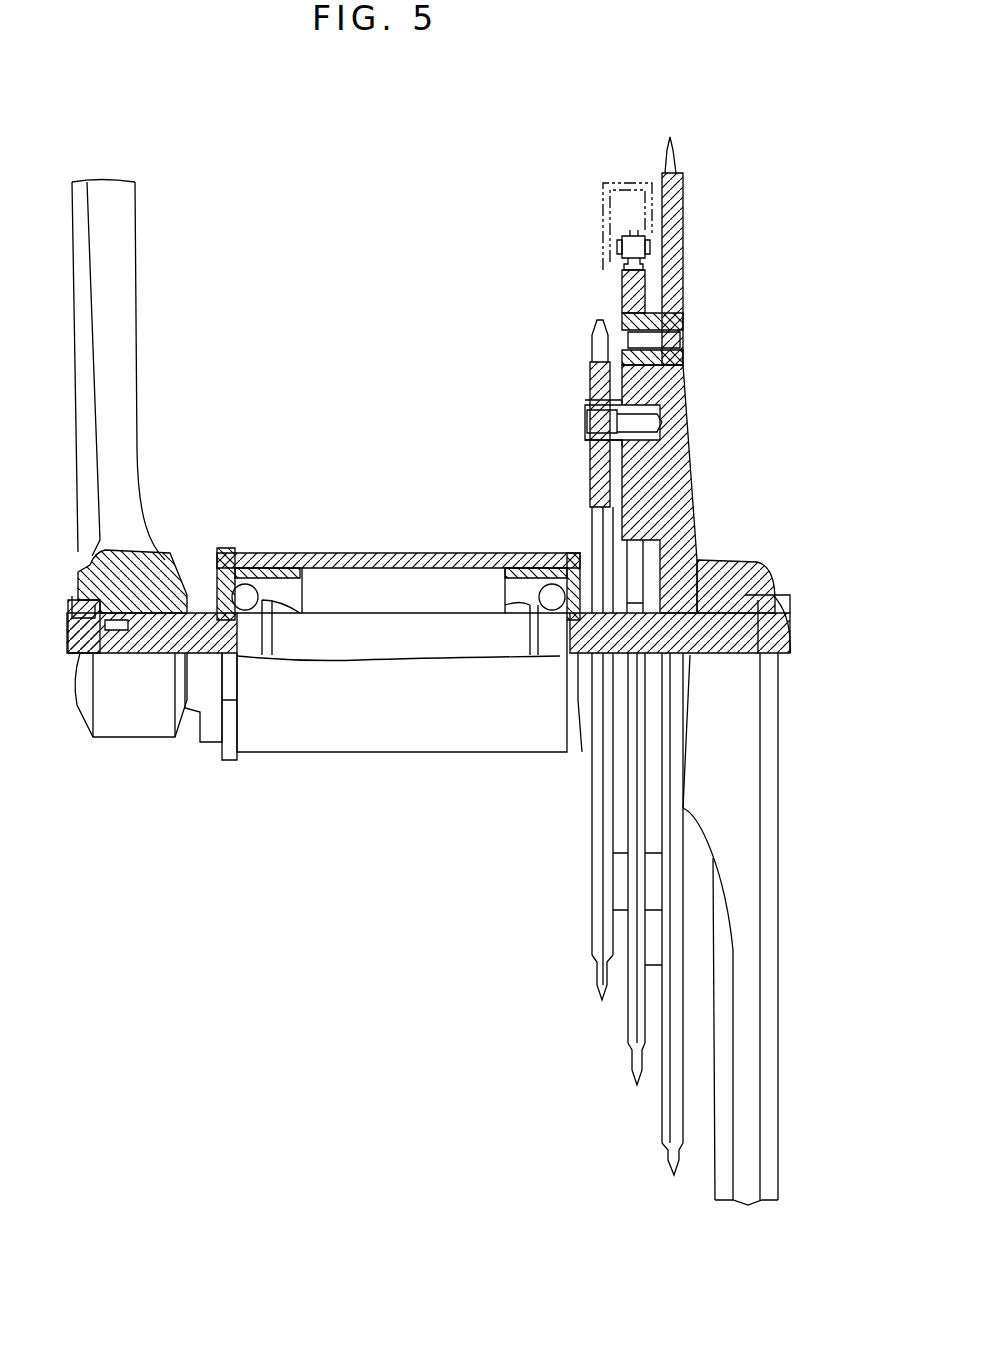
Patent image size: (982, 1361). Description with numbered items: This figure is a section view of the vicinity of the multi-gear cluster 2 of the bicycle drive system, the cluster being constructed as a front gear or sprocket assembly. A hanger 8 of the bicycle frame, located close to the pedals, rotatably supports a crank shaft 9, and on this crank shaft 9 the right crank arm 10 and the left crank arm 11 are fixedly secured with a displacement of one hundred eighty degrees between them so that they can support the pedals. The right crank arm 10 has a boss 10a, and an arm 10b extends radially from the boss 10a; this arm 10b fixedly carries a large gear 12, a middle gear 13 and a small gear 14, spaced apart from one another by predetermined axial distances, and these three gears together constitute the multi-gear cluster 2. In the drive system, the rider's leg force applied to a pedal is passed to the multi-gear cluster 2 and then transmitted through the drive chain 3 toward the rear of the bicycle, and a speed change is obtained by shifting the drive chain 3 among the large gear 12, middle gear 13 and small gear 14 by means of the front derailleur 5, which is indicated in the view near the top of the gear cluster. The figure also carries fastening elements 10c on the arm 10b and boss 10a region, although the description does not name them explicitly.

The multi-gear cluster 2 is at (579, 673).
The drive chain 3 is at (618, 232).
The front derailleur 5 is at (610, 178).
The hanger 8 is at (372, 553).
The crank shaft 9 is at (437, 622).
The right crank arm 10 is at (772, 1022).
The boss 10a is at (727, 567).
The arm 10b is at (672, 470).
The fastening bolt 10c is at (683, 320).
The left crank arm 11 is at (128, 405).
The large gear 12 is at (668, 1158).
The middle gear 13 is at (632, 1065).
The small gear 14 is at (593, 978).